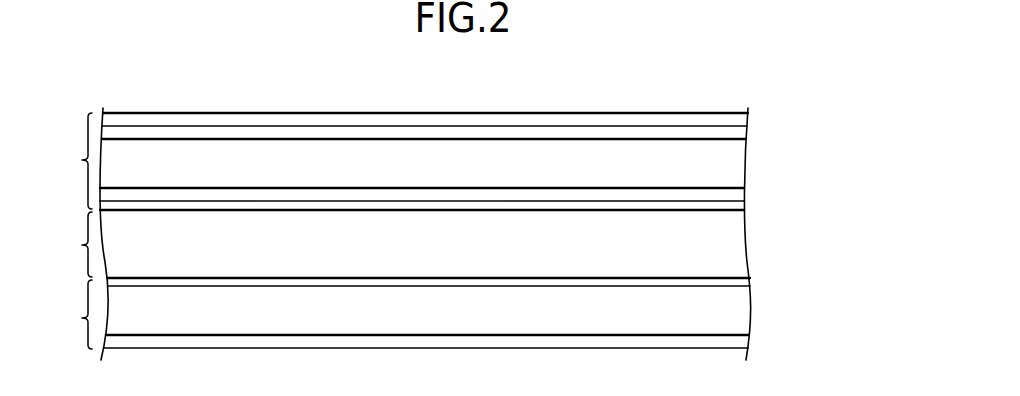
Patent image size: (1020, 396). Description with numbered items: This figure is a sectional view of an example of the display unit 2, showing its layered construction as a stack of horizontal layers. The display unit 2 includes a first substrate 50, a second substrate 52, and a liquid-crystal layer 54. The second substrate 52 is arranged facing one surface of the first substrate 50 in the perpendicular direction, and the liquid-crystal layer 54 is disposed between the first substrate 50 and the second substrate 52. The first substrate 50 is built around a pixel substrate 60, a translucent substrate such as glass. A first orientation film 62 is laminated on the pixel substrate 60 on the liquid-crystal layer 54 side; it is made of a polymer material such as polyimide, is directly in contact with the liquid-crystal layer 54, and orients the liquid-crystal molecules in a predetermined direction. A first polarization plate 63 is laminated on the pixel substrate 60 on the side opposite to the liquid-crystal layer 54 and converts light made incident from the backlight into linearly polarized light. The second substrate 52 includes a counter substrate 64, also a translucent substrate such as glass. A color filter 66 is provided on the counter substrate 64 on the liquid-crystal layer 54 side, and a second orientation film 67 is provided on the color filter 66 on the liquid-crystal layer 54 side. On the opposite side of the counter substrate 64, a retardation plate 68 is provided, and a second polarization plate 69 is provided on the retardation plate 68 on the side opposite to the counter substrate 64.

The display unit 2 is at (827, 110).
The first substrate 50 is at (72, 314).
The second substrate 52 is at (72, 161).
The liquid-crystal layer 54 is at (72, 244).
The pixel substrate 60 is at (738, 313).
The first orientation film 62 is at (745, 283).
The first polarization plate 63 is at (745, 343).
The counter substrate 64 is at (728, 166).
The color filter 66 is at (735, 196).
The second orientation film 67 is at (735, 205).
The retardation plate 68 is at (735, 134).
The second polarization plate 69 is at (738, 118).